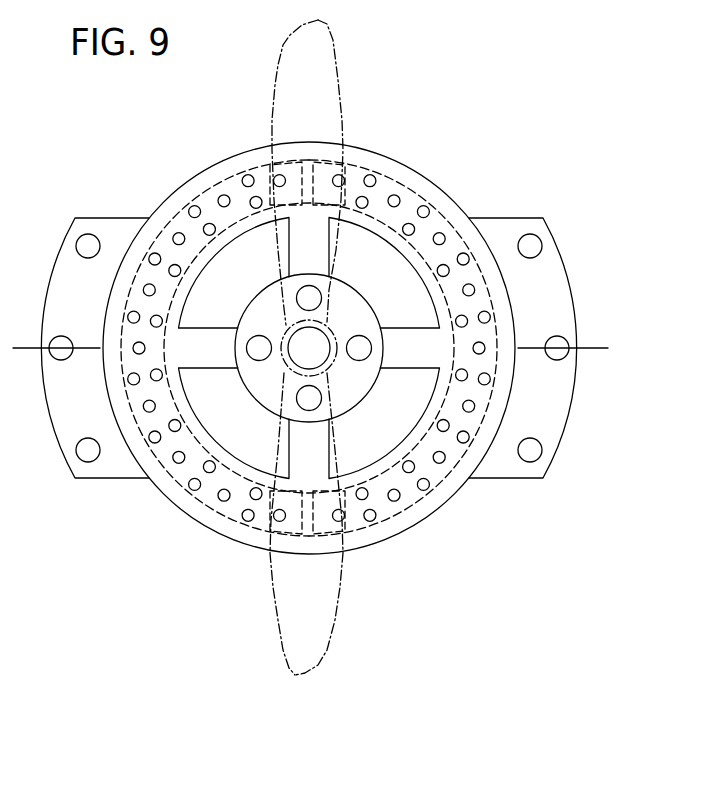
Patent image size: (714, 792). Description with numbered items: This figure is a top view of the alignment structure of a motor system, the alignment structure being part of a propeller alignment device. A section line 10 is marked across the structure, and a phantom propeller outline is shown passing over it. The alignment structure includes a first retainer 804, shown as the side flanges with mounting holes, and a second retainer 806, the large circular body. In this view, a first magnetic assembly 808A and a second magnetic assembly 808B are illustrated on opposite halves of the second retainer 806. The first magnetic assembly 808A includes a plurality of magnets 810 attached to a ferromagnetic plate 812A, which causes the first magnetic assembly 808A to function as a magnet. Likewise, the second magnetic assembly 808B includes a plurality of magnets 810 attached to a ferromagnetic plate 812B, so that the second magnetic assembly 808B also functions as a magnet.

The section line 10- 10 is at (13, 348).
The first retainer 804 is at (550, 269).
The second retainer 806 is at (452, 196).
The first magnetic assembly 808A is at (233, 140).
The second magnetic assembly 808B is at (387, 140).
The magnets 810 is at (127, 558).
The ferromagnetic plate 812A is at (268, 522).
The ferromagnetic plate 812B is at (350, 522).